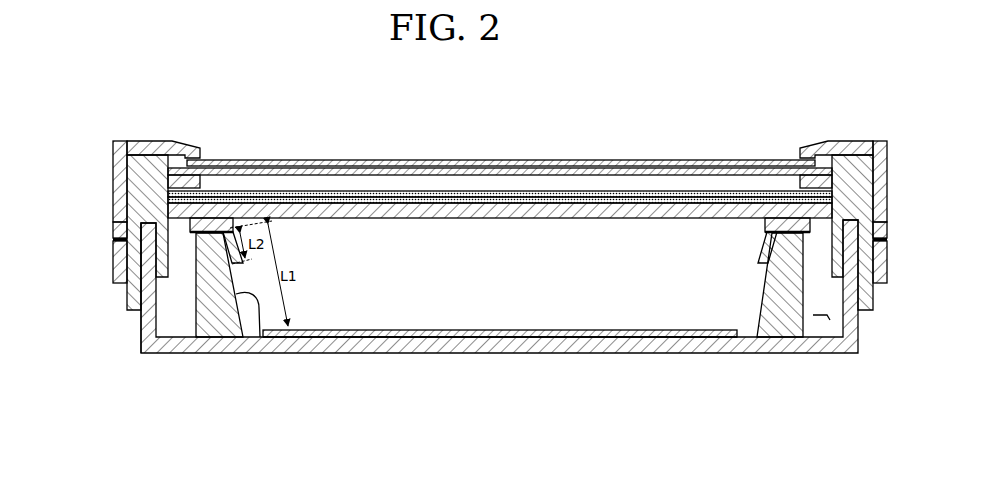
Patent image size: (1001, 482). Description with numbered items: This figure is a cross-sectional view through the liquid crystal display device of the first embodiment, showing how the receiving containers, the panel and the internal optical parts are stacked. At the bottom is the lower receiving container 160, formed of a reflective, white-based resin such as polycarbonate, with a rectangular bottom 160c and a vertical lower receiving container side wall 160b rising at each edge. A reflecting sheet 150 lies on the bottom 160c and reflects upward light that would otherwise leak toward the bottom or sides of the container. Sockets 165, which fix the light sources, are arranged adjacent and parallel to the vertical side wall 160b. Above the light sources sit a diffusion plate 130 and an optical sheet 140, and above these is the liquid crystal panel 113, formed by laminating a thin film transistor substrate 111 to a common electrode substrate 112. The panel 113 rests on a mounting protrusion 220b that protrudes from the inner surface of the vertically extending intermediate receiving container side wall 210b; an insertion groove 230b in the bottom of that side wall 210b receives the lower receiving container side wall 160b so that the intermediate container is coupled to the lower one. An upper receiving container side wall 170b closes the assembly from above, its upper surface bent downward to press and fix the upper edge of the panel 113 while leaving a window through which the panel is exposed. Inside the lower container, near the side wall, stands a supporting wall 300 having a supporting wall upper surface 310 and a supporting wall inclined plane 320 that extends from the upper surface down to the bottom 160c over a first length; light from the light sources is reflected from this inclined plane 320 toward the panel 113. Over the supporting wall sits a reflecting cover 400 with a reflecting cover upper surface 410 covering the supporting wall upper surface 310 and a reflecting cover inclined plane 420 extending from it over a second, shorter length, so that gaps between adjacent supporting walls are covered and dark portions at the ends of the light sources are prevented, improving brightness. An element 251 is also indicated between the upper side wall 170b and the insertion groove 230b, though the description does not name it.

The thin film transistor substrate 111 is at (655, 163).
The common electrode substrate 112 is at (617, 170).
The liquid crystal panel 113 is at (500, 128).
The diffusion plate 130 is at (512, 195).
The optical sheet 140 is at (565, 198).
The reflecting sheet 150 is at (603, 341).
The lower receiving container 160 is at (457, 325).
The lower receiving container side wall 160b is at (148, 322).
The bottom 160c is at (672, 338).
The sockets 165 is at (820, 321).
The upper receiving container side wall 170b is at (120, 152).
The intermediate receiving container side wall 210b is at (143, 150).
The mounting protrusion 220b is at (189, 148).
The insertion groove 230b is at (115, 248).
The adhesive member 251 is at (113, 224).
The supporting wall 300 is at (235, 332).
The supporting wall upper surface 310 is at (221, 331).
The supporting wall inclined plane 320 is at (260, 331).
The reflecting cover 400 is at (248, 171).
The reflecting cover upper surface 410 is at (215, 218).
The reflecting cover inclined plane 420 is at (233, 232).